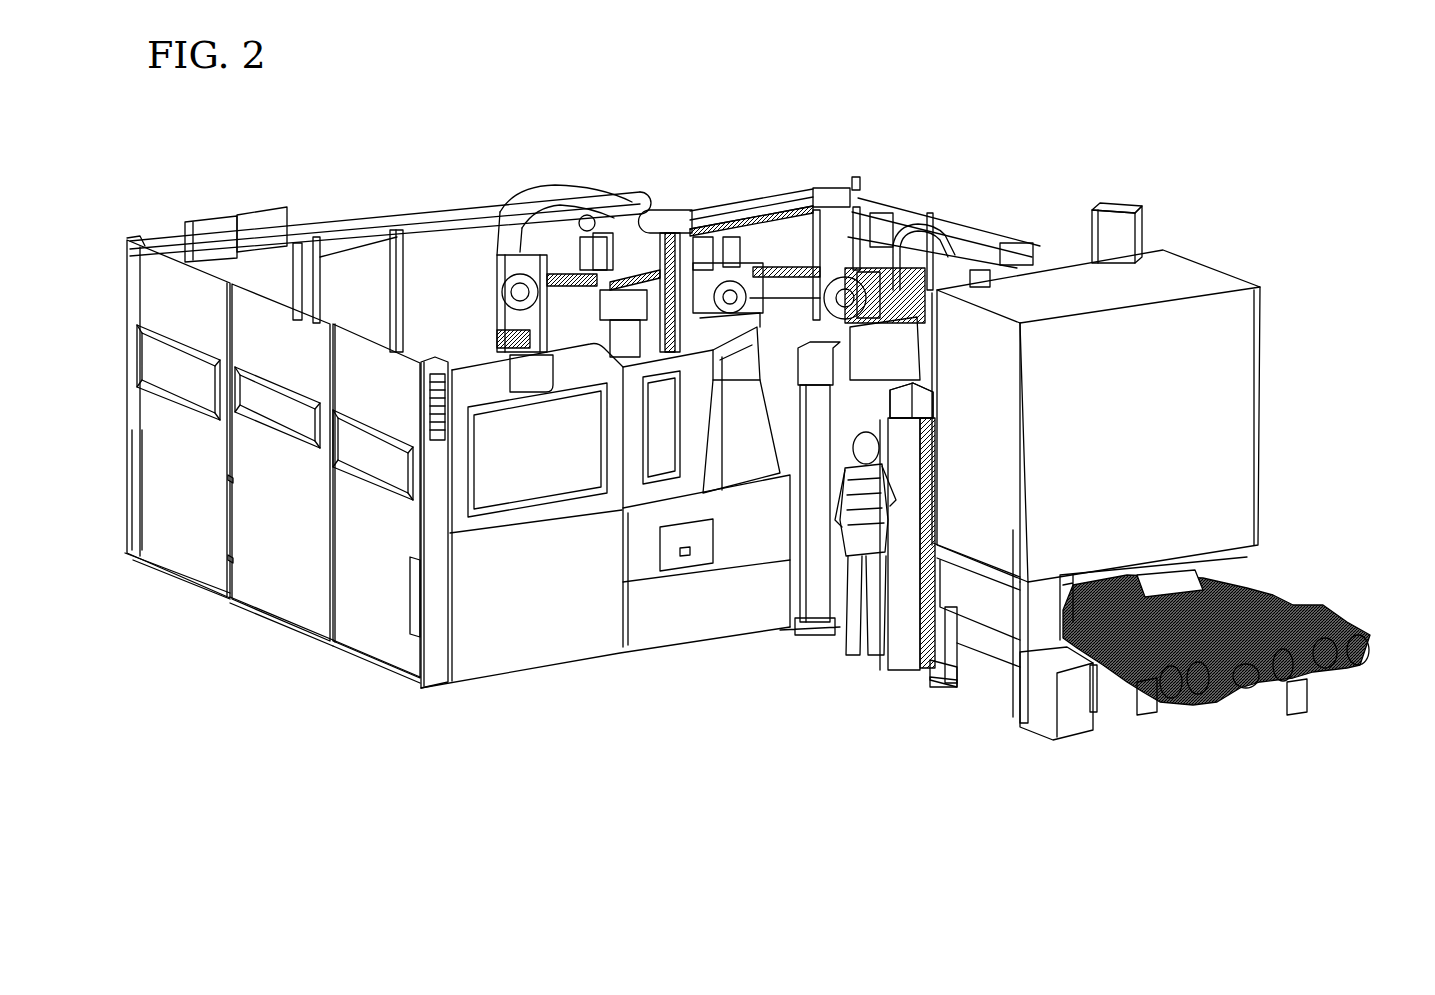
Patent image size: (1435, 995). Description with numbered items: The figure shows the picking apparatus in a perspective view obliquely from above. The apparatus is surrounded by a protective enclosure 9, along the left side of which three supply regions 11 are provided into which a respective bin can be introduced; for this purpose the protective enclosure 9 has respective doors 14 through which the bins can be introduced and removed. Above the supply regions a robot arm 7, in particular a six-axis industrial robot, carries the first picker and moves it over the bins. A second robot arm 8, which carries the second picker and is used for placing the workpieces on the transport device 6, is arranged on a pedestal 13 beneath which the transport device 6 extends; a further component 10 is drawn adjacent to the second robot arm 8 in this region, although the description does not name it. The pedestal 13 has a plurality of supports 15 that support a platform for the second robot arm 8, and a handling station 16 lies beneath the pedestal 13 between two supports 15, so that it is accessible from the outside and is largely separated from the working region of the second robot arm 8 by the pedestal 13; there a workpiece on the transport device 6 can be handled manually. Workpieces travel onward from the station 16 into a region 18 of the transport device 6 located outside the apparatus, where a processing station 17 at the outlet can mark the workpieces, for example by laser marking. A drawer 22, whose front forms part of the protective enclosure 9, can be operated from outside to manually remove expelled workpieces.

The transport device 6 is at (850, 417).
The robot arm 7 is at (563, 280).
The second robot arm 8 is at (797, 277).
The protective enclosure 9 is at (510, 630).
The housing unit 10 is at (878, 340).
The supply regions 11 is at (155, 594).
The pedestal 13 is at (907, 407).
The doors 14 is at (203, 560).
The supports 15 is at (818, 613).
The handling station 16 is at (858, 680).
The processing station 17 is at (1230, 393).
The region of the transport device 18 is at (1333, 598).
The drawer 22 is at (675, 562).